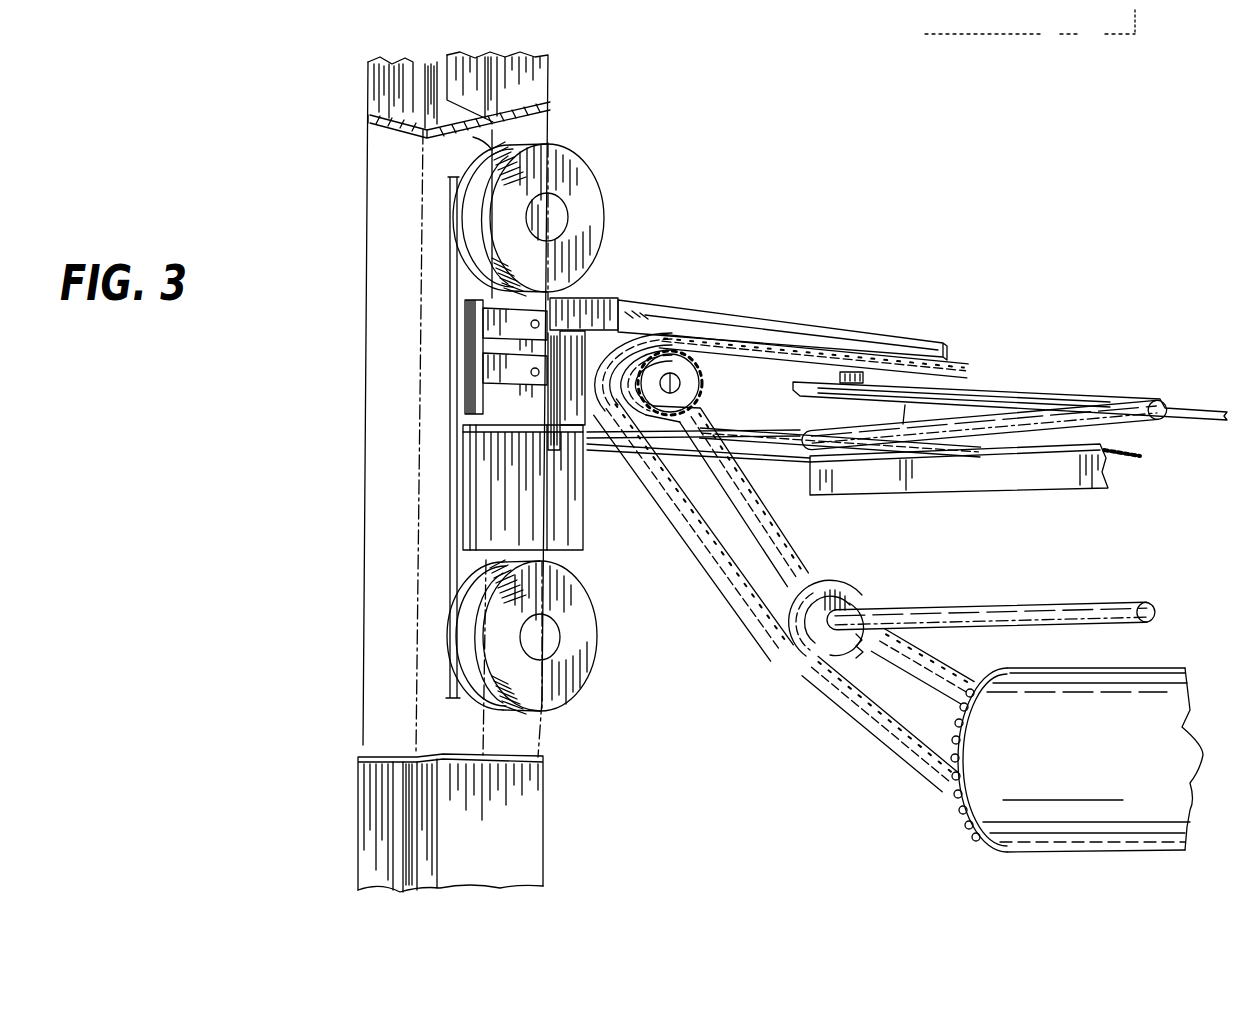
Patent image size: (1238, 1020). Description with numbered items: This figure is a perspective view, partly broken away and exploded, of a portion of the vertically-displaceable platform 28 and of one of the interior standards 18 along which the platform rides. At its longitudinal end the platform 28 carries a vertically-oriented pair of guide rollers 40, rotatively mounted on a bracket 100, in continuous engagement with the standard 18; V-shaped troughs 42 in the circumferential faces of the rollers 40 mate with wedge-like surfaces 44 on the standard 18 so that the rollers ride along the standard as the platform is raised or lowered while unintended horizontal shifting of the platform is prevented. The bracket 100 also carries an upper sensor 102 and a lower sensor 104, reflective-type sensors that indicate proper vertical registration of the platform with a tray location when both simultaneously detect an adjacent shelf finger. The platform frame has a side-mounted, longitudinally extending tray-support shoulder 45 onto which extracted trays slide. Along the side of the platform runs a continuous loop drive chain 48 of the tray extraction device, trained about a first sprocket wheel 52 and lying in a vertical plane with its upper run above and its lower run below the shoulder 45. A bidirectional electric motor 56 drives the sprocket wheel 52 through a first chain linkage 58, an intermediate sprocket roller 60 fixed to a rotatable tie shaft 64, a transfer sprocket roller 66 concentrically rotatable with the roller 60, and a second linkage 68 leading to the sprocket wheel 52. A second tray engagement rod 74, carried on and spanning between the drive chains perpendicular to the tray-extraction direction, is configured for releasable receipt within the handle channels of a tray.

The interior standard 18 is at (523, 84).
The platform 28 is at (781, 292).
The guide roller 40 is at (560, 168).
The V-shaped trough 42 is at (497, 250).
The wedge-like surface 44 is at (473, 137).
The tray-support shoulder 45 is at (1050, 362).
The drive chain 48 is at (960, 368).
The first sprocket wheel 52 is at (687, 383).
The bidirectional electric motor 56 is at (1073, 754).
The first chain linkage 58 is at (855, 714).
The intermediate sprocket roller 60 is at (858, 596).
The tie shaft 64 is at (1108, 610).
The transfer sprocket roller 66 is at (803, 548).
The second linkage 68 is at (688, 528).
The second tray engagement rod 74 is at (1157, 403).
The bracket 100 is at (467, 405).
The upper sensor 102 is at (483, 322).
The lower sensor 104 is at (483, 370).